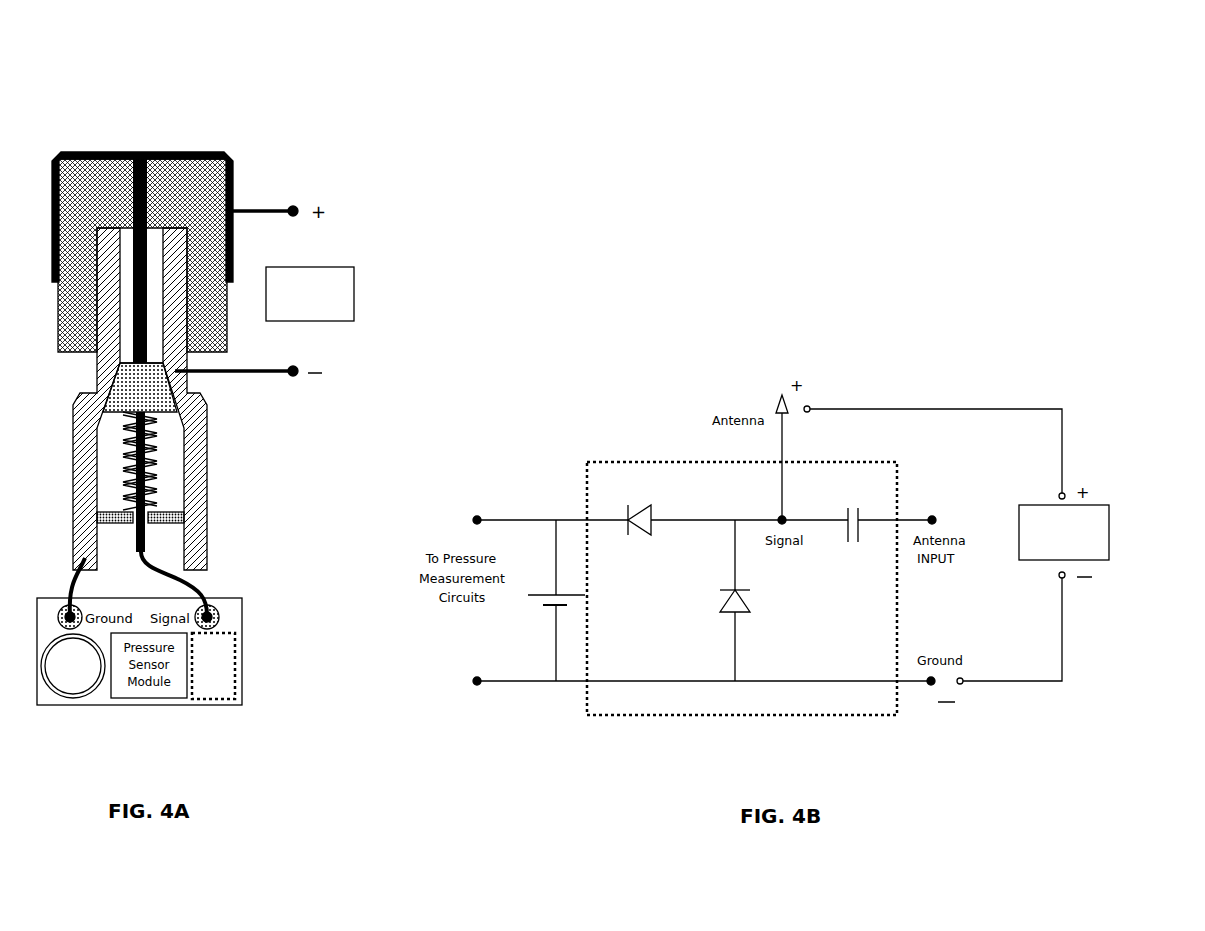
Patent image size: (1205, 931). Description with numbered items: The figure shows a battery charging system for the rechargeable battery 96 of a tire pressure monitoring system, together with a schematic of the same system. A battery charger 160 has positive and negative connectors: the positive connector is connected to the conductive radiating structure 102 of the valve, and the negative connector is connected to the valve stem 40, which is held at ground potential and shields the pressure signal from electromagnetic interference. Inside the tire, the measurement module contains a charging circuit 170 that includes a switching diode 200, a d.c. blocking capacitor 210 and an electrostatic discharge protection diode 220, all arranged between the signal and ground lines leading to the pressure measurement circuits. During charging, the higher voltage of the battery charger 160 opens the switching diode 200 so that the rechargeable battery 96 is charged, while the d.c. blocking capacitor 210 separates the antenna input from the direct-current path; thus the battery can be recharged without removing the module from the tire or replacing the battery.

In FIG. 4A, the conductive radiating structure 102 is at (180, 152).
In FIG. 4A, the valve stem 40 is at (197, 438).
In FIG. 4A, the battery charger 160 is at (354, 295).
In FIG. 4B, the battery charger 160 is at (1109, 527).
In FIG. 4A, the rechargeable battery 96 is at (73, 680).
In FIG. 4B, the rechargeable battery 96 is at (550, 607).
In FIG. 4A, the charging circuit 170 is at (218, 688).
In FIG. 4B, the charging circuit 170 is at (858, 722).
In FIG. 4B, the switching diode 200 is at (622, 507).
In FIG. 4B, the d.c. blocking capacitor 210 is at (862, 513).
In FIG. 4B, the electrostatic discharge protection diode 220 is at (720, 615).